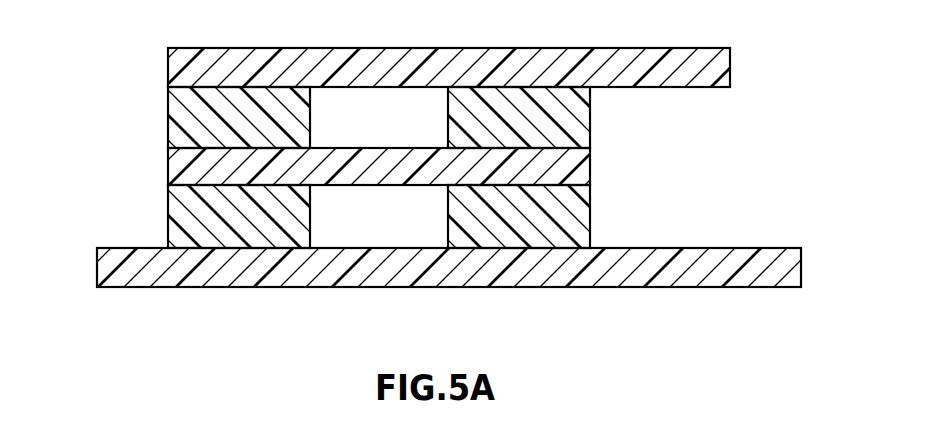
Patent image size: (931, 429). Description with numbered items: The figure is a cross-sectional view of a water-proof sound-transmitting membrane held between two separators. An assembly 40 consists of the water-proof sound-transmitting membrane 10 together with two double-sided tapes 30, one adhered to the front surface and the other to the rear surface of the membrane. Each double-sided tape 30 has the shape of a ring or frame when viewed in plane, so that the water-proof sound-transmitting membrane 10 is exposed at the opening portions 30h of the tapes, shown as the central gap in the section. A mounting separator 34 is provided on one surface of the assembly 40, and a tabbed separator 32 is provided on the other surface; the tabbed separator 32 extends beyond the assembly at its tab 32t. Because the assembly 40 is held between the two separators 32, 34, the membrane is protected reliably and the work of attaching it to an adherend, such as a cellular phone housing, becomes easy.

The water-proof sound-transmitting membrane 10 is at (178, 165).
The double-sided tape 30 is at (178, 120).
The opening portion 30h is at (375, 212).
The tabbed separator 32 is at (180, 68).
The tab of tabbed separator 32t is at (715, 68).
The mounting separator 34 is at (112, 263).
The assembly 40 is at (78, 102).